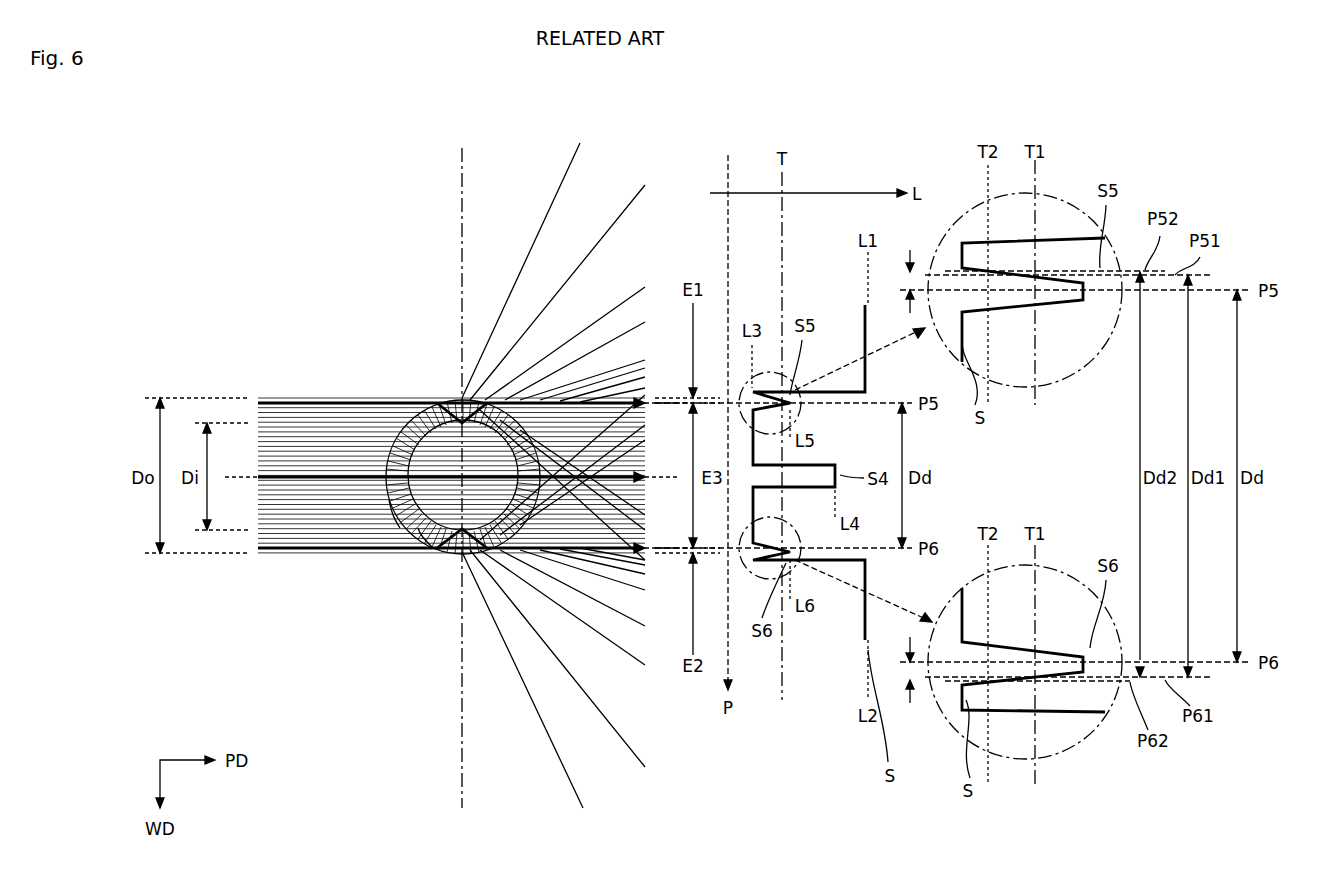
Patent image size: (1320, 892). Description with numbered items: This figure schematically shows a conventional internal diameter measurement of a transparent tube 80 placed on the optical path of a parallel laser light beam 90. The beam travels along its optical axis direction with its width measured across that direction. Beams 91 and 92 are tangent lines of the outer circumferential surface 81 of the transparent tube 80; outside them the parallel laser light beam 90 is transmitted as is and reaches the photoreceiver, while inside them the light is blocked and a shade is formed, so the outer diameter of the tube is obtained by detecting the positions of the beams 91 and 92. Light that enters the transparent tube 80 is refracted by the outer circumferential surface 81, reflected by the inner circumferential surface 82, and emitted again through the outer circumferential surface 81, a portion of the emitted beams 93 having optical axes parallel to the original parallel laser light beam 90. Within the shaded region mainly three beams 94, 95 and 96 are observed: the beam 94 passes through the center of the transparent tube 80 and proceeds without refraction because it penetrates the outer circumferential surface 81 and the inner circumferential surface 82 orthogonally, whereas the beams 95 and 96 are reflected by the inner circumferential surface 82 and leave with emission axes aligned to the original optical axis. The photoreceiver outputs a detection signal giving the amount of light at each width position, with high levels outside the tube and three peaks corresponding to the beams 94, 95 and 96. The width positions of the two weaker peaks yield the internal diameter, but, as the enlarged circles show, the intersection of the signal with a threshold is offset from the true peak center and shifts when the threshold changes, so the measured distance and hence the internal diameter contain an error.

The transparent tube 80 is at (402, 412).
The outer circumferential surface 81 is at (386, 510).
The inner circumferential surface 82 is at (422, 530).
The parallel laser light beam 90 is at (305, 430).
The beam 91 is at (320, 398).
The beam 92 is at (300, 555).
The emitted beams 93 is at (560, 330).
The beam 94 is at (575, 500).
The beam 95 is at (630, 388).
The beam 96 is at (623, 563).